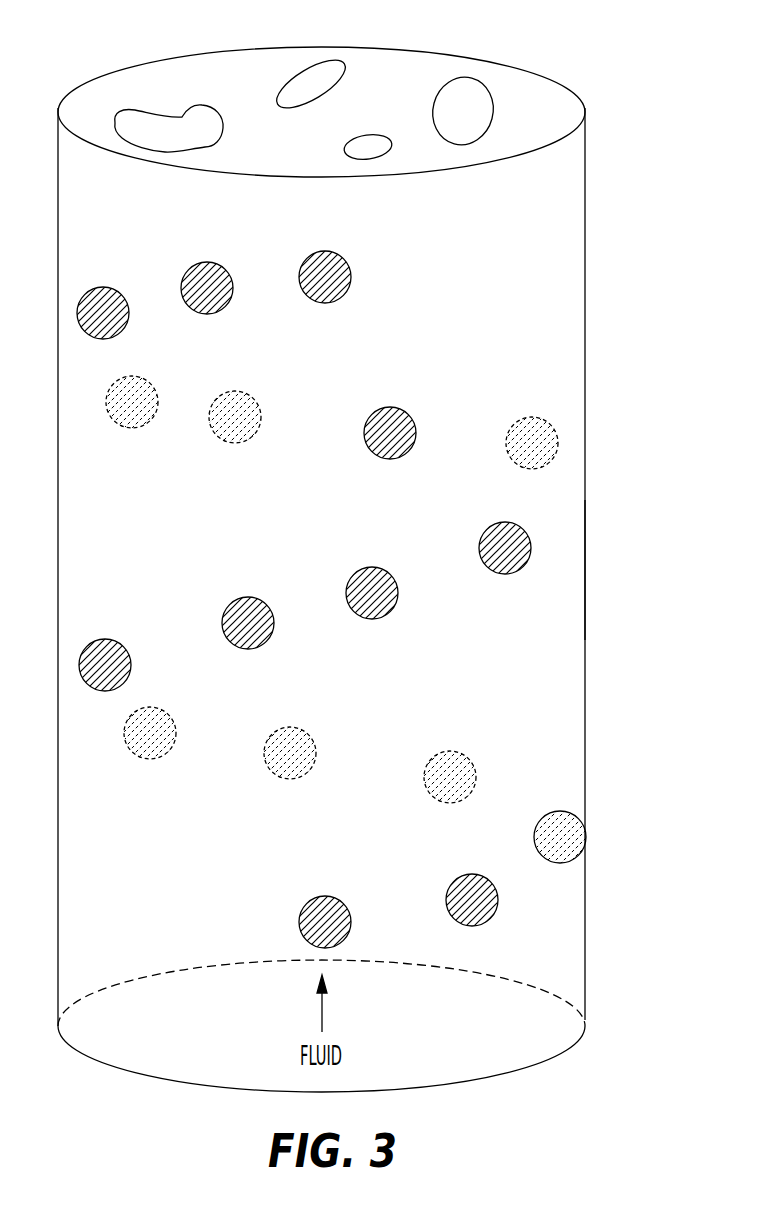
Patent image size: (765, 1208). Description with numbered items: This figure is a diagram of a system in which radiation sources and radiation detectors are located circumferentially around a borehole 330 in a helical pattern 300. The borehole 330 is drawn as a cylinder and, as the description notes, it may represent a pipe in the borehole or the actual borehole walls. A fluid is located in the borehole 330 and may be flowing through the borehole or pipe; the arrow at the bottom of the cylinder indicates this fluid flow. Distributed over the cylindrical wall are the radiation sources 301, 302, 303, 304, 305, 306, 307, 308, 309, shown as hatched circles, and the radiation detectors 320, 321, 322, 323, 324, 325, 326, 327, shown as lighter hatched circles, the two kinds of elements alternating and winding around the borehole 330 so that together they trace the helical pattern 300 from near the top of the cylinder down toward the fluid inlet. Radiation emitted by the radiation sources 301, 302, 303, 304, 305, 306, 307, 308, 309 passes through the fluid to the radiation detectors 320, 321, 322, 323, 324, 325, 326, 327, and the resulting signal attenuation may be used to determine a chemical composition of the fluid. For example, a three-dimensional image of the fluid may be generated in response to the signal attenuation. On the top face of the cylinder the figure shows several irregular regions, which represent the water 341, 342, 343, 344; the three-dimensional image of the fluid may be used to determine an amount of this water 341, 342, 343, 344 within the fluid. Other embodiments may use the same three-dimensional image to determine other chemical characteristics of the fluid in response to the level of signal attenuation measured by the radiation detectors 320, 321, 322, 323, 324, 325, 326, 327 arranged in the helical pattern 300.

The helical pattern 300 is at (562, 344).
The borehole 330 is at (586, 568).
The water 341 is at (202, 103).
The water 342 is at (326, 62).
The water 343 is at (384, 137).
The water 344 is at (478, 77).
The radiation source 301 is at (318, 251).
The radiation source 302 is at (96, 287).
The radiation source 303 is at (228, 391).
The radiation source 304 is at (525, 417).
The radiation source 305 is at (365, 567).
The radiation source 306 is at (98, 639).
The radiation source 307 is at (283, 727).
The radiation source 308 is at (586, 824).
The radiation source 309 is at (318, 896).
The radiation detector 320 is at (200, 262).
The radiation detector 321 is at (125, 376).
The radiation detector 322 is at (383, 407).
The radiation detector 323 is at (498, 522).
The radiation detector 324 is at (241, 597).
The radiation detector 325 is at (143, 707).
The radiation detector 326 is at (443, 751).
The radiation detector 327 is at (465, 874).